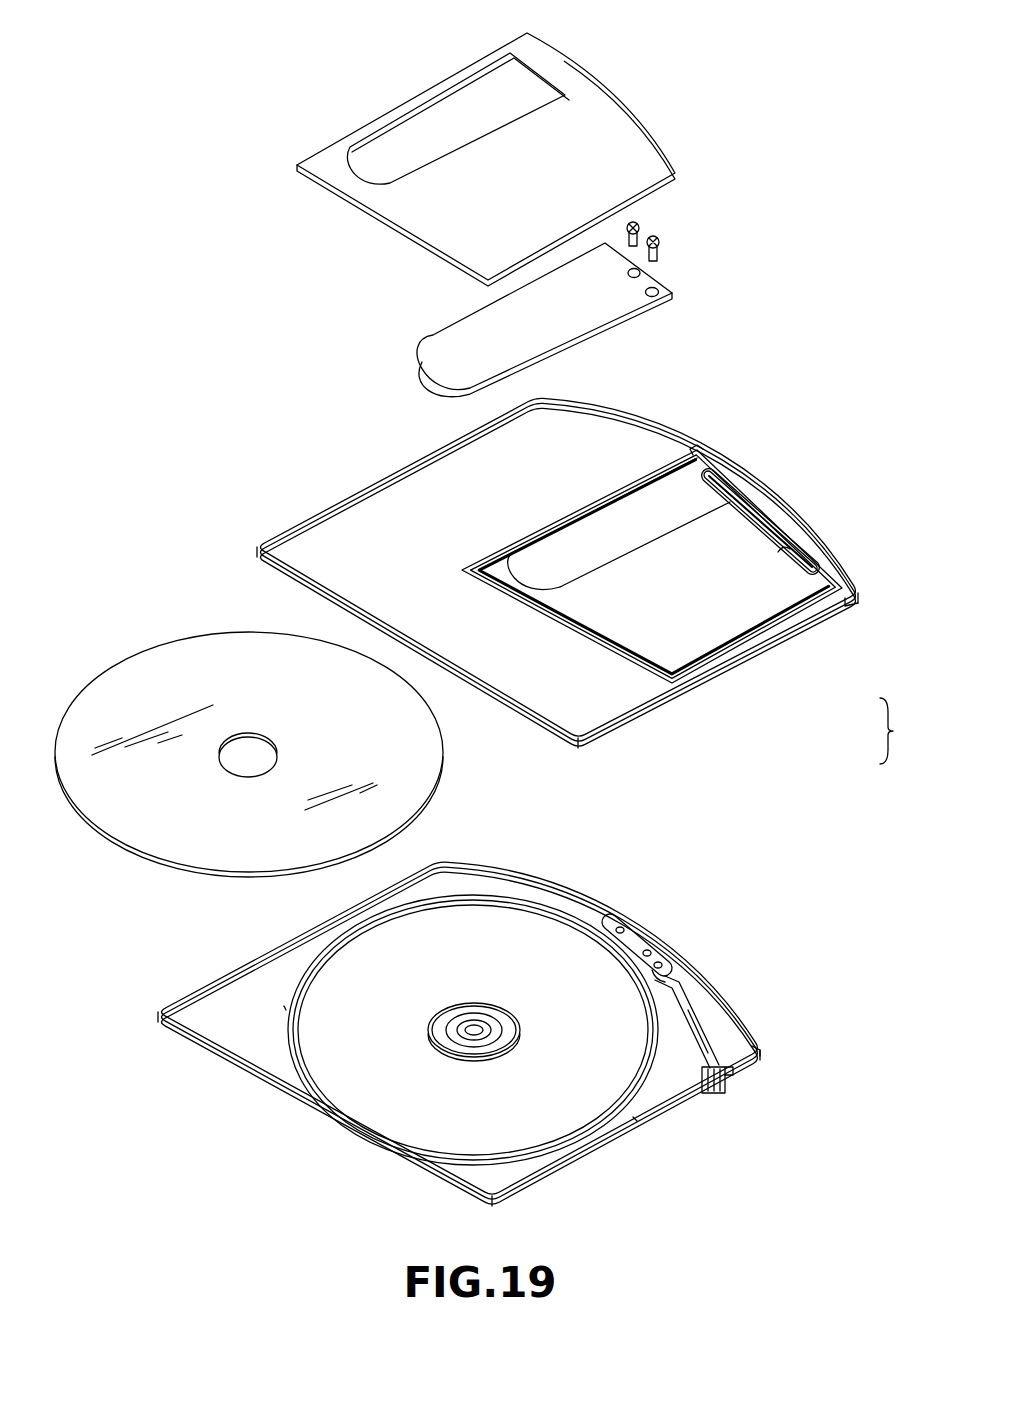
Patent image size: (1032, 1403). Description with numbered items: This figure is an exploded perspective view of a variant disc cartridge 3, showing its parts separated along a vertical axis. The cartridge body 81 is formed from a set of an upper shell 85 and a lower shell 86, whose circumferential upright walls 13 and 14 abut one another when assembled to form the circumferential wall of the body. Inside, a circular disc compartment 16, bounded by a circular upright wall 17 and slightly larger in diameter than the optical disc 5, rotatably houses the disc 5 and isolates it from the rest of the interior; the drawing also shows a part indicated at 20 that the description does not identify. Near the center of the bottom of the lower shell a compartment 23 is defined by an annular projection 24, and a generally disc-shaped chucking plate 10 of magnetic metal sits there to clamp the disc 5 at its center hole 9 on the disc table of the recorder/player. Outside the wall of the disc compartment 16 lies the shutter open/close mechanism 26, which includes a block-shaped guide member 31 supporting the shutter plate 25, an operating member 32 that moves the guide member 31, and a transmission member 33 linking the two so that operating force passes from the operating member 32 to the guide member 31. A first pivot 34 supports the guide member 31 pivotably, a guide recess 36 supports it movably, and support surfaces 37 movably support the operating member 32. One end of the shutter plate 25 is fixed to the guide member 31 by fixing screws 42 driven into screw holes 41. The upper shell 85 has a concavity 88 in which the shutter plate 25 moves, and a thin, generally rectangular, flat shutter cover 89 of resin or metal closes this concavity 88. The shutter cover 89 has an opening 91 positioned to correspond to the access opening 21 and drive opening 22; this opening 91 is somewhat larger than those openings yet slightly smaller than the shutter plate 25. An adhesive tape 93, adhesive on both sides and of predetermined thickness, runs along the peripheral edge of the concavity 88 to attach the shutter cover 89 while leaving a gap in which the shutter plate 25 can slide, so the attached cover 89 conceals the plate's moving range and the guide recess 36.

The disc cartridge 3 is at (147, 992).
The optical disc 5 is at (108, 702).
The center hole 9 is at (228, 755).
The chucking plate 10 is at (493, 1025).
The upright wall 13 is at (545, 1178).
The upright wall 14 is at (697, 685).
The disc compartment 16 is at (440, 925).
The circular upright wall 17 is at (284, 1006).
The shutter cover 20 is at (663, 420).
The access opening 21 is at (657, 542).
The drive opening 22 is at (560, 584).
The compartment 23 is at (442, 1025).
The annular projection 24 is at (432, 1030).
The shutter plate 25 is at (589, 318).
The shutter open/close mechanism 26 is at (702, 975).
The guide member 31 is at (633, 937).
The operating member 32 is at (730, 1072).
The transmission member 33 is at (715, 1045).
The first pivot 34 is at (662, 960).
The guide recess 36 is at (790, 550).
The support surfaces 37 is at (757, 652).
The screw holes 41 is at (620, 926).
The fixing screws 42 is at (643, 227).
The cartridge body 81 is at (903, 731).
The upper shell 85 is at (728, 1068).
The lower shell 86 is at (852, 603).
The concavity 88 is at (760, 594).
The shutter cover 89 is at (608, 115).
The opening 91 is at (519, 118).
The adhesive tape 93 is at (698, 452).